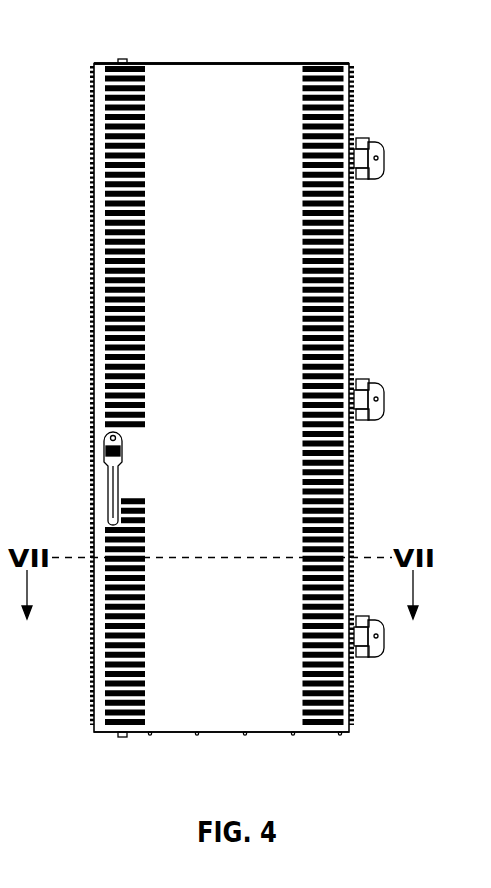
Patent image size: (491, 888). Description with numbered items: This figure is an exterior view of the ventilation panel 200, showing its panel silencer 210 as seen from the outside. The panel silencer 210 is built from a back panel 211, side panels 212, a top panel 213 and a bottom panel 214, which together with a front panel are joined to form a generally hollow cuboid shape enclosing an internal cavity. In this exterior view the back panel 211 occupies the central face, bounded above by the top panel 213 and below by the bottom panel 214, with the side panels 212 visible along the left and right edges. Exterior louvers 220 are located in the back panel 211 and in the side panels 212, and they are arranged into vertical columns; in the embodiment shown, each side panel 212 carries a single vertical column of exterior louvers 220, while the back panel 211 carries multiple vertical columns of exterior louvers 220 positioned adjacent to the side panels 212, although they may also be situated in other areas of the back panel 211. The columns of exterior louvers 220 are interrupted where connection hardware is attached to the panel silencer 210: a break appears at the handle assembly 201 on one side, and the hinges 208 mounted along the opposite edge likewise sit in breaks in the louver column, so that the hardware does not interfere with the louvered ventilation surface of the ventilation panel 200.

The ventilation panel 200 is at (94, 20).
The handle assembly 201 is at (117, 453).
The hinges 208 is at (378, 163).
The panel silencer 210 is at (349, 63).
The back panel 211 is at (187, 87).
The side panels 212 is at (92, 102).
The top panel 213 is at (233, 63).
The bottom panel 214 is at (178, 733).
The exterior louvers 220 is at (92, 165).